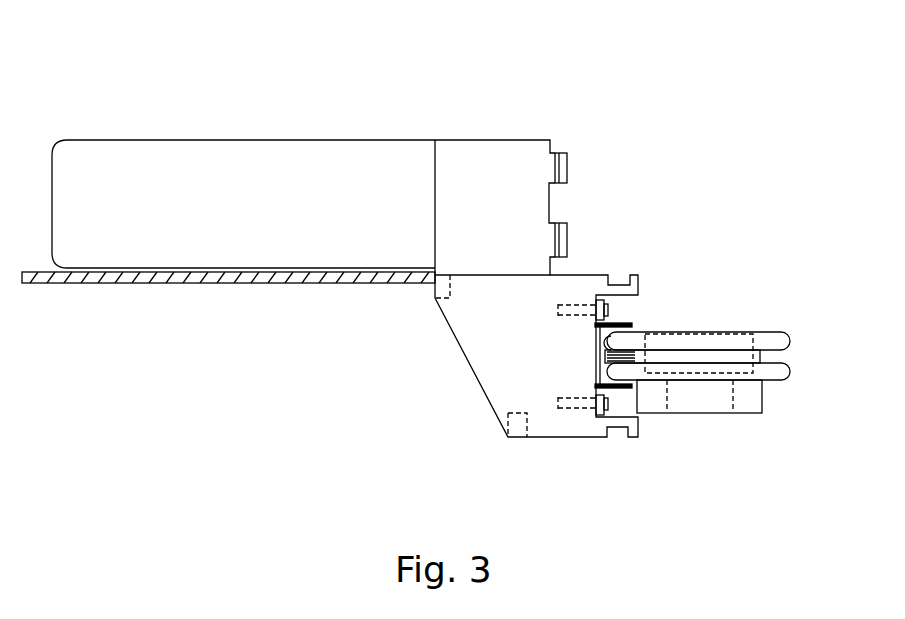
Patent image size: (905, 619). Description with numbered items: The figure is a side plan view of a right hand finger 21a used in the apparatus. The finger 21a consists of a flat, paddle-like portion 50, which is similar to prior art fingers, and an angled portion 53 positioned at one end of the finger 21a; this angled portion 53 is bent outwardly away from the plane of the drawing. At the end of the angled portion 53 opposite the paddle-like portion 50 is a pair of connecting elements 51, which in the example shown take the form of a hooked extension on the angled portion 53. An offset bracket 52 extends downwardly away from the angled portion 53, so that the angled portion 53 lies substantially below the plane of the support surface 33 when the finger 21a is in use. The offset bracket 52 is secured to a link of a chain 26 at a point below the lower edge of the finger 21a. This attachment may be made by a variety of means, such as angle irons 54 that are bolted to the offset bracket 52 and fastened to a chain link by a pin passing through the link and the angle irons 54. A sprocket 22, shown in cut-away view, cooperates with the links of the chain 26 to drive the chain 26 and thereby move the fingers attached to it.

The right hand finger 21a is at (328, 122).
The paddle-like portion 50 is at (178, 165).
The angled portion 53 is at (482, 165).
The connecting elements 51 is at (568, 167).
The offset bracket 52 is at (490, 330).
The angle irons 54 is at (608, 325).
The chain 26 is at (615, 347).
The sprocket 22 is at (778, 374).
The support surface 33 is at (162, 285).